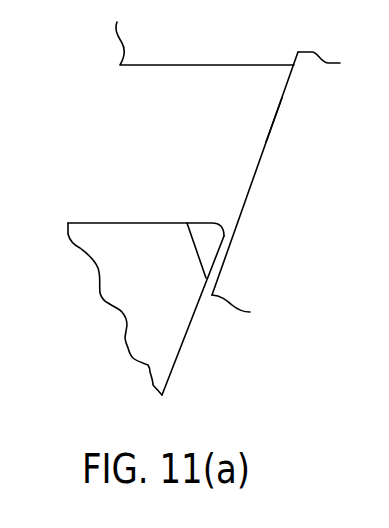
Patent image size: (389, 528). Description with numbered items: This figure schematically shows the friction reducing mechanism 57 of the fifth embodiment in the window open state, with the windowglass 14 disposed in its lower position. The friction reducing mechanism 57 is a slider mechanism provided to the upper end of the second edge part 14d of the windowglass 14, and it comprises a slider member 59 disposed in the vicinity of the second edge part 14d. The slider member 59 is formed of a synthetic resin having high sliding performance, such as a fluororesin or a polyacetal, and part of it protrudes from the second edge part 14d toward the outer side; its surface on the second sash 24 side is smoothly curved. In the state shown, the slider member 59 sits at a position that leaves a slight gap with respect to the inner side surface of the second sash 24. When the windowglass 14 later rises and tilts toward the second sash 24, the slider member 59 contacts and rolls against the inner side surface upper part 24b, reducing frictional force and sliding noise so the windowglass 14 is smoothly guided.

The windowglass 14 is at (145, 330).
The second edge part 14d is at (183, 345).
The second sash 24 is at (270, 202).
The inner side surface upper part 24b is at (268, 136).
The friction reducing mechanism 57 is at (179, 190).
The slider member 59 is at (208, 237).